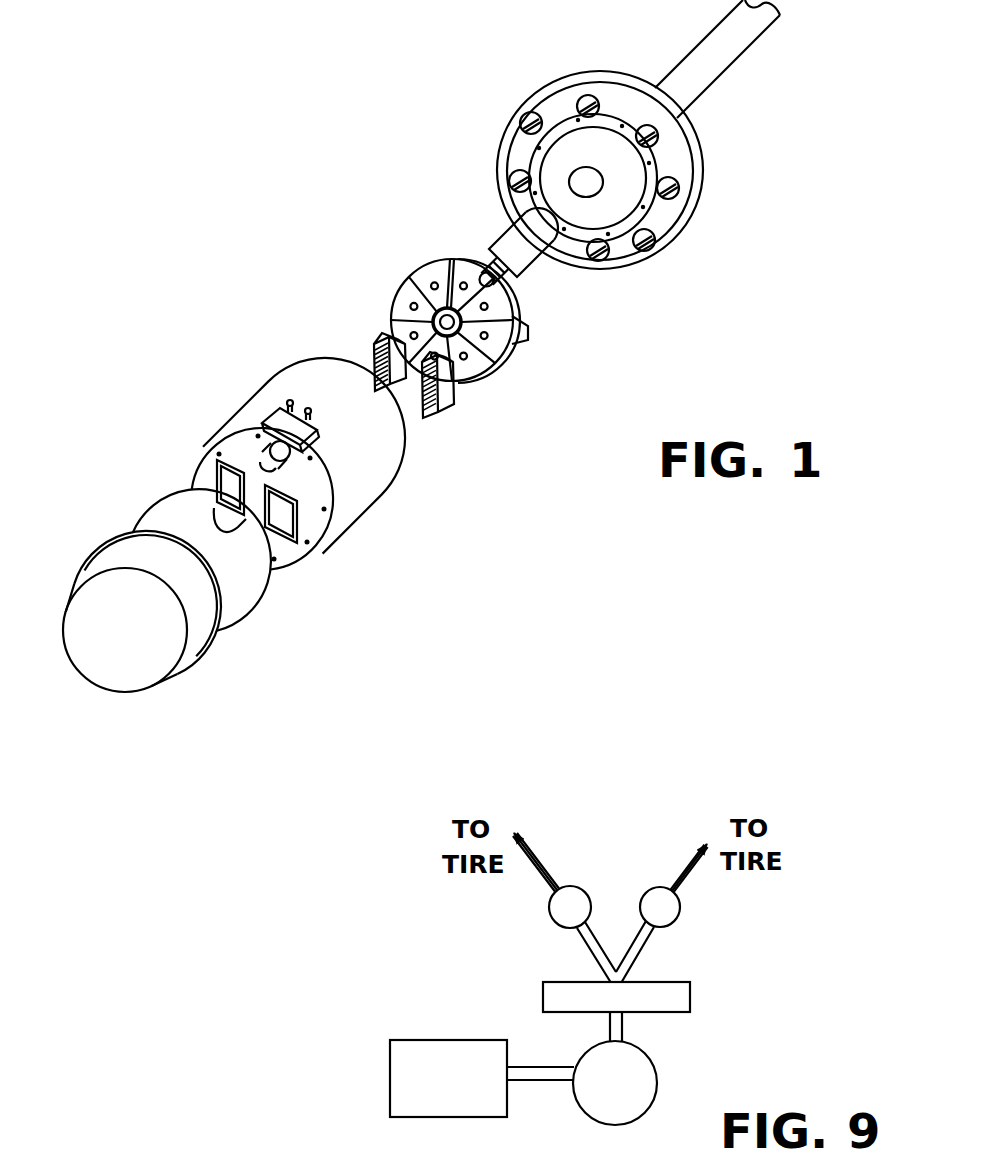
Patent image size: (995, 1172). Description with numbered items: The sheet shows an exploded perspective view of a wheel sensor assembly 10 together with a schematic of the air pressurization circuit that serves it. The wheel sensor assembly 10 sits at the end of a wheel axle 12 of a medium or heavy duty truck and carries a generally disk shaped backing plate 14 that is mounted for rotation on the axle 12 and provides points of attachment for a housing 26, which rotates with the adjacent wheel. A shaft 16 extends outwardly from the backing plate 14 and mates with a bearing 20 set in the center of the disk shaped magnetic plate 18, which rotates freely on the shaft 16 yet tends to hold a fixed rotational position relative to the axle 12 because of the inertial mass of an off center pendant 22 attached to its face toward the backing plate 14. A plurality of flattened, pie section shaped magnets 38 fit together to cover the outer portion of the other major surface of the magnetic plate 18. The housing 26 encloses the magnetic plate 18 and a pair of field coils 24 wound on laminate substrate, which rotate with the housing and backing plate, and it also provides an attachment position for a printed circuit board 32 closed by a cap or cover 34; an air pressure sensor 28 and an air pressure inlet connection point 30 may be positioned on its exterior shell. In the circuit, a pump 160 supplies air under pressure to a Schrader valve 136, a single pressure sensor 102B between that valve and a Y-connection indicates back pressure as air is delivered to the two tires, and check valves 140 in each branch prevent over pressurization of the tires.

In FIG. 1, the wheel sensor assembly 10 is at (277, 236).
In FIG. 1, the wheel axle 12 is at (733, 47).
In FIG. 1, the backing plate 14 is at (523, 157).
In FIG. 1, the shaft 16 is at (523, 248).
In FIG. 1, the magnetic plate 18 is at (469, 298).
In FIG. 1, the bearing 20 is at (418, 277).
In FIG. 1, the pendant 22 is at (530, 342).
In FIG. 1, the field coils 24 is at (477, 335).
In FIG. 1, the housing 26 is at (278, 464).
In FIG. 1, the air pressure sensor 28 is at (263, 464).
In FIG. 1, the air pressure inlet connection point 30 is at (283, 418).
In FIG. 1, the printed circuit board 32 is at (240, 600).
In FIG. 1, the cap or cover 34 is at (138, 663).
In FIG. 1, the magnets 38 is at (458, 262).
In FIG. 9, the check valves 140 is at (680, 907).
In FIG. 9, the pressure sensor 102B is at (690, 994).
In FIG. 9, the pump 160 is at (442, 1040).
In FIG. 9, the Schrader valve 136 is at (657, 1077).